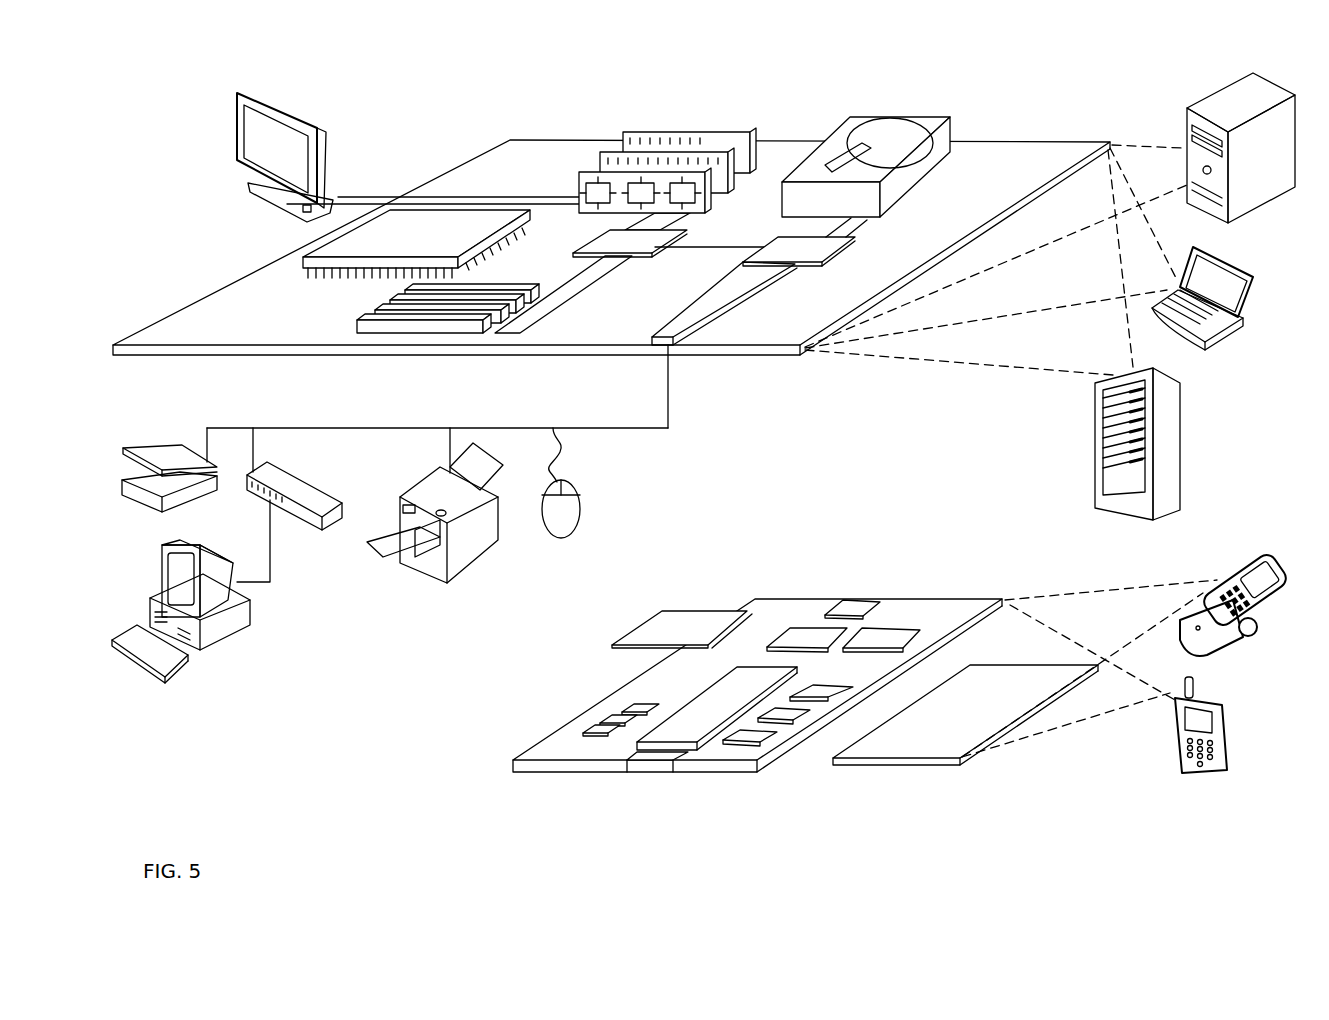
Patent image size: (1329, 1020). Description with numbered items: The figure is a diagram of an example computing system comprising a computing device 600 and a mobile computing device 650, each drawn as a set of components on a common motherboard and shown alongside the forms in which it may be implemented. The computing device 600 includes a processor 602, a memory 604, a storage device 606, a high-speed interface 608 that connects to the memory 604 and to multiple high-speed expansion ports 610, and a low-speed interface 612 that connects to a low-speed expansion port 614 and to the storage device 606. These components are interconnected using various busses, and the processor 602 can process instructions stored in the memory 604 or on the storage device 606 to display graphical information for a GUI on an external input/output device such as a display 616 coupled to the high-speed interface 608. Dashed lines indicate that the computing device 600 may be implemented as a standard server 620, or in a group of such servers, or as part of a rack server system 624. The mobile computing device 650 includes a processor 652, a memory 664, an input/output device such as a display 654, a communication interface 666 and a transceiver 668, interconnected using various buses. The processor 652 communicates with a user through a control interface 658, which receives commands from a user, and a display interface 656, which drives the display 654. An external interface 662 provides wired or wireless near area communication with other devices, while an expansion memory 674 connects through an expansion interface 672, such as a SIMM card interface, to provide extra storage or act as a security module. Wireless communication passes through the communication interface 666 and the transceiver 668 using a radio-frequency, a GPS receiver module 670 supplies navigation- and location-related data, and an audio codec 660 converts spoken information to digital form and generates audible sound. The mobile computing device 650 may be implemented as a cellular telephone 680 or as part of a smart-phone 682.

The computing device 600 is at (430, 110).
The processor 602 is at (300, 260).
The memory 604 is at (633, 132).
The storage device 606 is at (865, 122).
The high-speed interface 608 is at (607, 242).
The high-speed expansion ports 610 is at (383, 318).
The low-speed interface 612 is at (782, 250).
The low-speed expansion port 614 is at (677, 345).
The display 616 is at (243, 95).
The standard server 620 is at (1187, 128).
The rack server system 624 is at (1095, 470).
The mobile computing device 650 is at (484, 774).
The processor 652 is at (690, 728).
The display 654 is at (925, 748).
The display interface 656 is at (757, 744).
The control interface 658 is at (790, 722).
The audio codec 660 is at (818, 699).
The external interface 662 is at (653, 762).
The memory 664 is at (604, 724).
The communication interface 666 is at (807, 637).
The transceiver 668 is at (887, 637).
The GPS receiver module 670 is at (858, 607).
The expansion interface 672 is at (733, 608).
The expansion memory 674 is at (667, 611).
The cellular telephone 680 is at (1232, 558).
The smart-phone 682 is at (1176, 733).